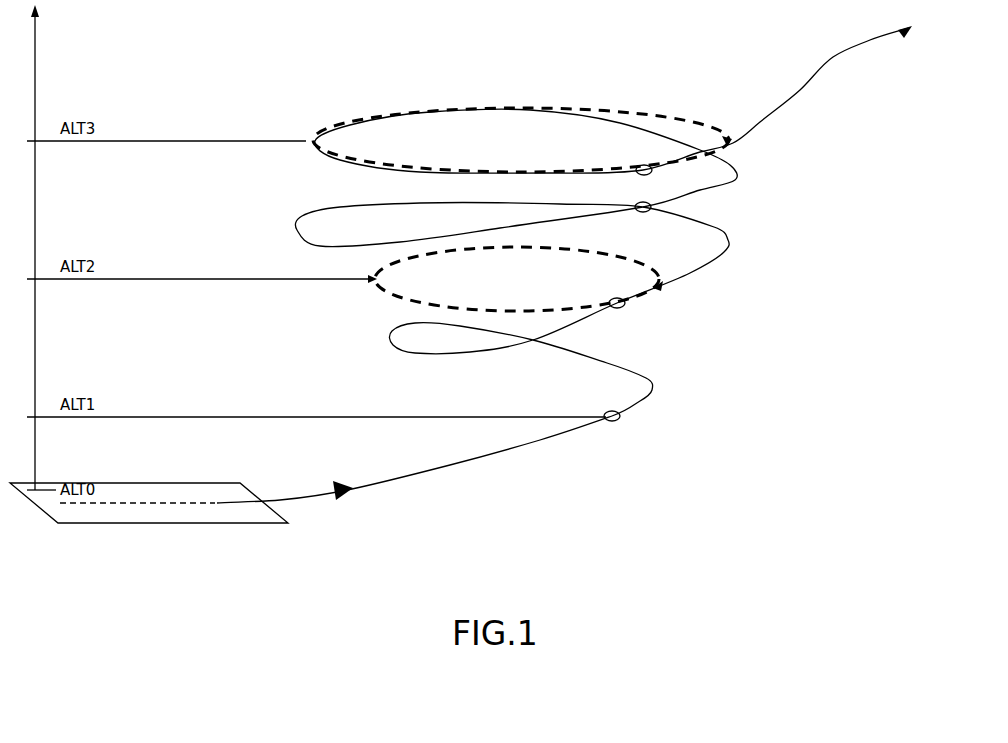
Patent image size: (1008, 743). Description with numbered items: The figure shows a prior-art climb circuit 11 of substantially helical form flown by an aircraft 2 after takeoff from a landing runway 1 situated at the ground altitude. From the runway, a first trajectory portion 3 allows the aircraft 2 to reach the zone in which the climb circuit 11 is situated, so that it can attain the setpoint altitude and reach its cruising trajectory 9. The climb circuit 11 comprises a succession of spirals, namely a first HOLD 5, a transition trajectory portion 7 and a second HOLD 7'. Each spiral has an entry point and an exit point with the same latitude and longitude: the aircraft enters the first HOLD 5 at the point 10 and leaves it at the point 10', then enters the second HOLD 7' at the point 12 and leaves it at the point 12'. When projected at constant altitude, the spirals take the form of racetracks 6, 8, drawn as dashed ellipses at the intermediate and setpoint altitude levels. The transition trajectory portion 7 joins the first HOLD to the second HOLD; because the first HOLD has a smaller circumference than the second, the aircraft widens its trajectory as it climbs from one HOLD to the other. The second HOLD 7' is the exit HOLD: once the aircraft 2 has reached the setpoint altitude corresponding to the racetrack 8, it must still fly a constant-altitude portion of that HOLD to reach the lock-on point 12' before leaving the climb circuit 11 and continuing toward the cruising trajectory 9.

The landing runway 1 is at (165, 517).
The aircraft 2 is at (343, 500).
The first trajectory portion 3 is at (422, 483).
The first HOLD 5 is at (604, 366).
The racetrack 6 is at (390, 297).
The transition trajectory portion 7 is at (688, 257).
The second HOLD 7' is at (697, 177).
The racetrack 8 is at (688, 118).
The cruising trajectory 9 is at (808, 88).
The entry point 10 is at (635, 439).
The exit point 10' is at (642, 326).
The climb circuit 11 is at (286, 222).
The entry point 12 is at (661, 229).
The exit point 12' is at (615, 154).